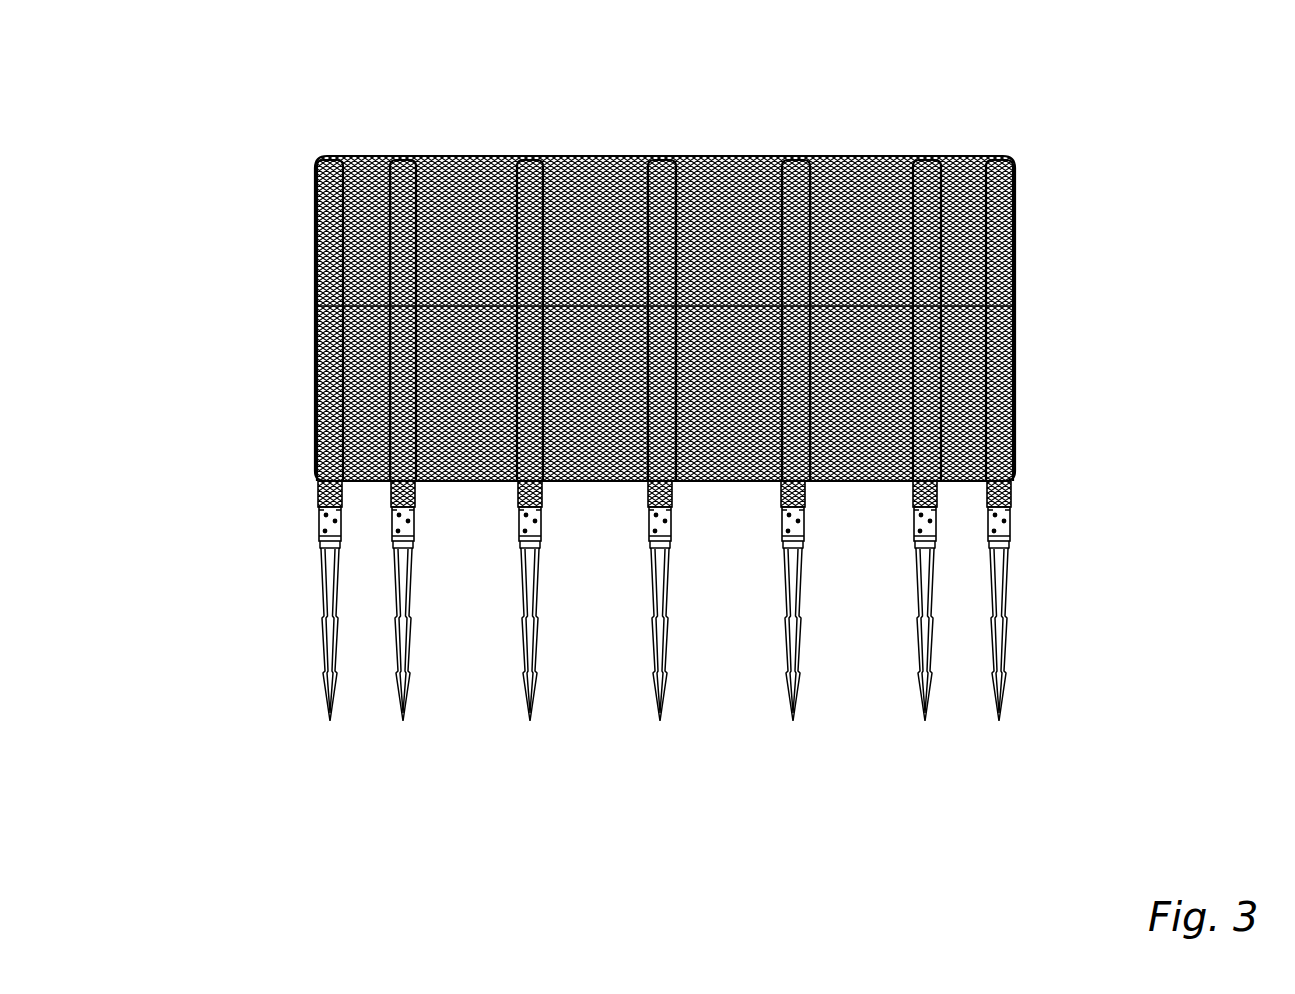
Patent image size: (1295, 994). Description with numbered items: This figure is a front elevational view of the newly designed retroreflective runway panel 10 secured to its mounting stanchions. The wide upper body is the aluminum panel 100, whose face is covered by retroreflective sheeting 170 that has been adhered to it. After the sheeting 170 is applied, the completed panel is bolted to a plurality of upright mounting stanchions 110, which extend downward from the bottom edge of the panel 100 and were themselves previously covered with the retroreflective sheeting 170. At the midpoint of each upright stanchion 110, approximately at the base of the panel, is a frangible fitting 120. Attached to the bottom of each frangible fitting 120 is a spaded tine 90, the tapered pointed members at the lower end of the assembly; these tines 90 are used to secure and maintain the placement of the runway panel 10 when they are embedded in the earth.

The retroreflective runway panel 10 is at (260, 123).
The aluminum panel 100 is at (595, 148).
The retroreflective sheeting 170 is at (845, 287).
The upright mounting stanchion 110 is at (310, 482).
The frangible fitting 120 is at (307, 515).
The spaded tine 90 is at (322, 563).